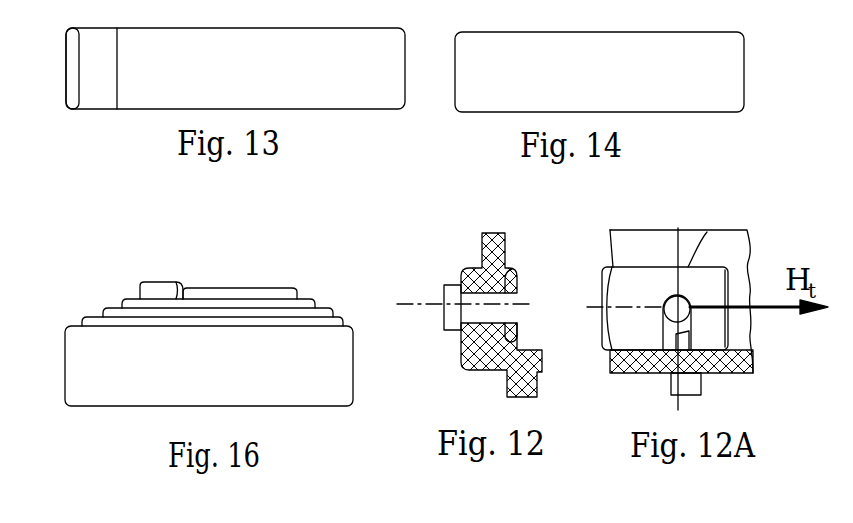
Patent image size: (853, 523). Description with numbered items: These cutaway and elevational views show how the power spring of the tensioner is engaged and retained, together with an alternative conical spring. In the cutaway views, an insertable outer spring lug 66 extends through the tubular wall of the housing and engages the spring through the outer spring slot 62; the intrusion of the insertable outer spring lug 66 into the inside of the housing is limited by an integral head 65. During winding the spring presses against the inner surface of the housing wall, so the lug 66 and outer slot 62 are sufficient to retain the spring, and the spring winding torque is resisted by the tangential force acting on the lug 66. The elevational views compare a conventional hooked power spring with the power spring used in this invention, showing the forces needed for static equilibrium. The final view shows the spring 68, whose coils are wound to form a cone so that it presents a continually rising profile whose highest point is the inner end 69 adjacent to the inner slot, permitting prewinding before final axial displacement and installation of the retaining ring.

In FIG. 12, the outer spring slot 62 is at (507, 329).
In FIG. 12A, the outer spring slot 62 is at (705, 375).
In FIG. 12, the integral head 65 is at (444, 290).
In FIG. 12, the insertable outer spring lug 66 is at (470, 316).
In FIG. 12A, the insertable outer spring lug 66 is at (706, 233).
In FIG. 16, the spring 68 is at (352, 376).
In FIG. 16, the inner end 69 is at (177, 283).